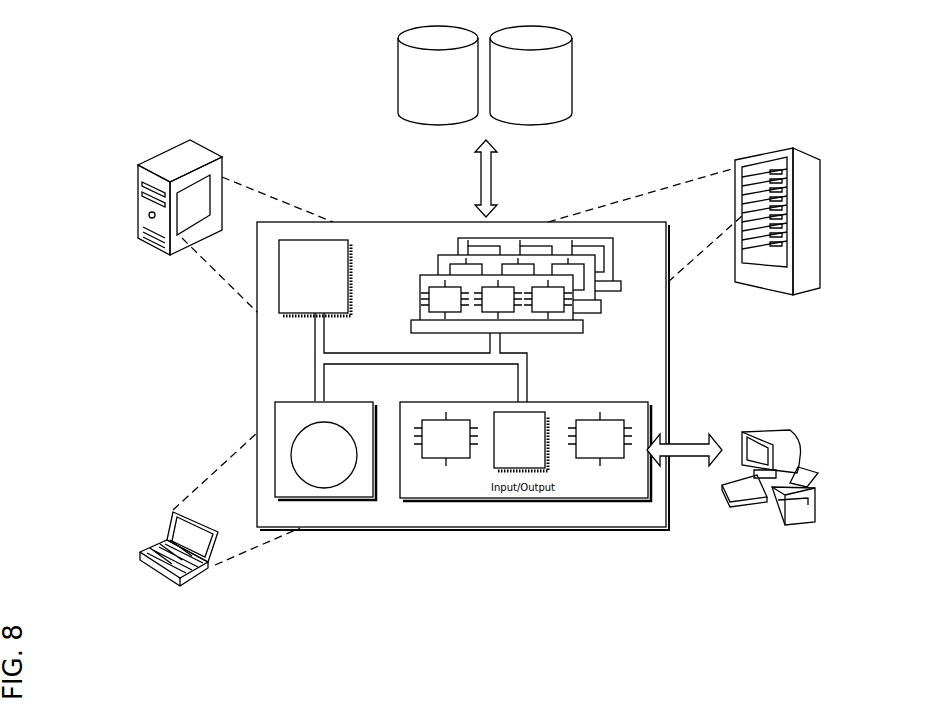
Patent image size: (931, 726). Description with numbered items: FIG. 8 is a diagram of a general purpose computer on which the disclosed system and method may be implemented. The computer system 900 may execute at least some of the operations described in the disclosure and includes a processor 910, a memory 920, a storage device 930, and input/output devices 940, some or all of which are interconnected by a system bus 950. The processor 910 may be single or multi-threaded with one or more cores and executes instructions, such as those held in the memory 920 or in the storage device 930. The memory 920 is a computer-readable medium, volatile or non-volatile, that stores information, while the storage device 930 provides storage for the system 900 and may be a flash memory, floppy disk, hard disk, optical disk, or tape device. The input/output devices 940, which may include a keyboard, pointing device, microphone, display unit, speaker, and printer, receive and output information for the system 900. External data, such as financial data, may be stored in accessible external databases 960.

The computer system 900 is at (203, 143).
The processor 910 is at (315, 278).
The memory 920 is at (619, 316).
The storage device 930 is at (325, 451).
The input/output devices 940 is at (743, 432).
The system bus 950 is at (421, 364).
The external databases 960 is at (485, 121).